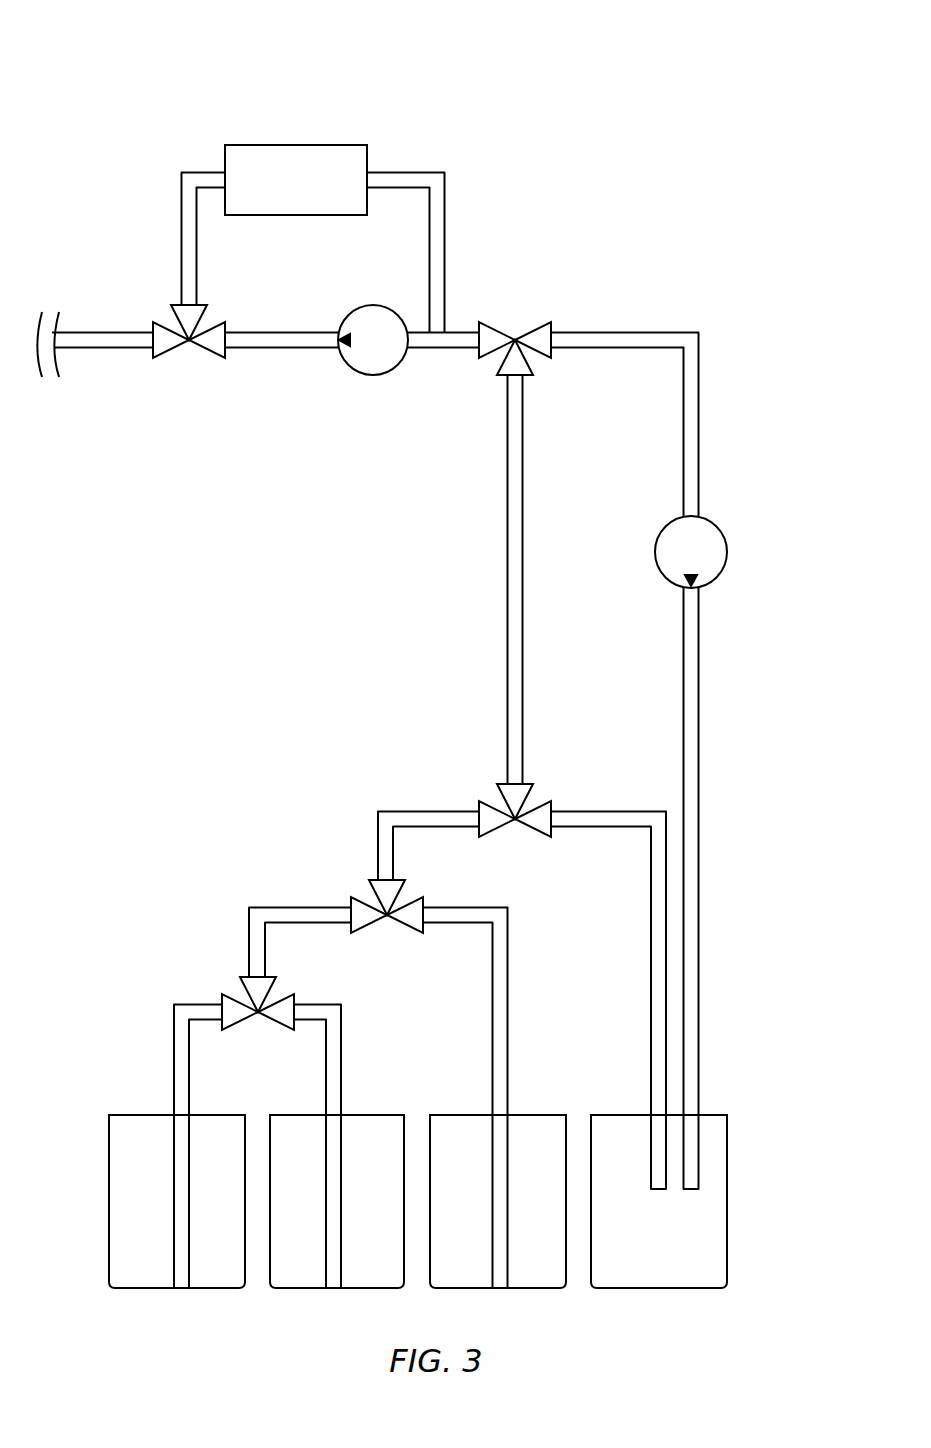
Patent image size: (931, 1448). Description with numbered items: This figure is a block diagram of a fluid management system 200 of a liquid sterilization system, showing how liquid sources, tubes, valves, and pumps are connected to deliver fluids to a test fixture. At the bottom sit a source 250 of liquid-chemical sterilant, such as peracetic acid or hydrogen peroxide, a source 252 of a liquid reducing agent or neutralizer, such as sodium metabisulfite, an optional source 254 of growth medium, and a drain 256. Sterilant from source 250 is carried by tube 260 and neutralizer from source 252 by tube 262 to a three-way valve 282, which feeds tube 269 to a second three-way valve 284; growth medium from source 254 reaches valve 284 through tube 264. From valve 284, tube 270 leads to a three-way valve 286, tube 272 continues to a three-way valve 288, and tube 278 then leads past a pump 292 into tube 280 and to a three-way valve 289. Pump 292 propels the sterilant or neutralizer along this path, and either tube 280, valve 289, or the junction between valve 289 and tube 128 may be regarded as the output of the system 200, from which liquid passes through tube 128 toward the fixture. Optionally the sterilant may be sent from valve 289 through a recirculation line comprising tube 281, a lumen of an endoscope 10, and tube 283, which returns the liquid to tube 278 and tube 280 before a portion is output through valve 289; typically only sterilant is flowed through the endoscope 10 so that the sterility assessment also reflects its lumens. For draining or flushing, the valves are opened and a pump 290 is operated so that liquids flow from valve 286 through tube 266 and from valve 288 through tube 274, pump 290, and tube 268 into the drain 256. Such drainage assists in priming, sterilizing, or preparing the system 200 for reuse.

The fluid management system 200 is at (160, 40).
The endoscope 10 is at (263, 145).
The tube 128 is at (110, 349).
The valve 289 is at (213, 353).
The tube 281 is at (181, 243).
The tube 283 is at (405, 172).
The tube 280 is at (288, 349).
The pump 292 is at (373, 376).
The tube 278 is at (447, 349).
The valve 288 is at (534, 325).
The tube 274 is at (699, 400).
The pump 290 is at (728, 552).
The tube 268 is at (699, 906).
The tube 272 is at (523, 722).
The valve 286 is at (529, 801).
The tube 270 is at (378, 840).
The tube 266 is at (651, 906).
The valve 284 is at (395, 928).
The tube 269 is at (252, 912).
The tube 264 is at (508, 1000).
The valve 282 is at (271, 1027).
The tube 260 is at (174, 1078).
The tube 262 is at (341, 1053).
The source of liquid-chemical sterilant 250 is at (213, 1288).
The source of liquid reducing agent or neutralizer 252 is at (372, 1288).
The source of growth medium 254 is at (524, 1288).
The drain 256 is at (675, 1288).